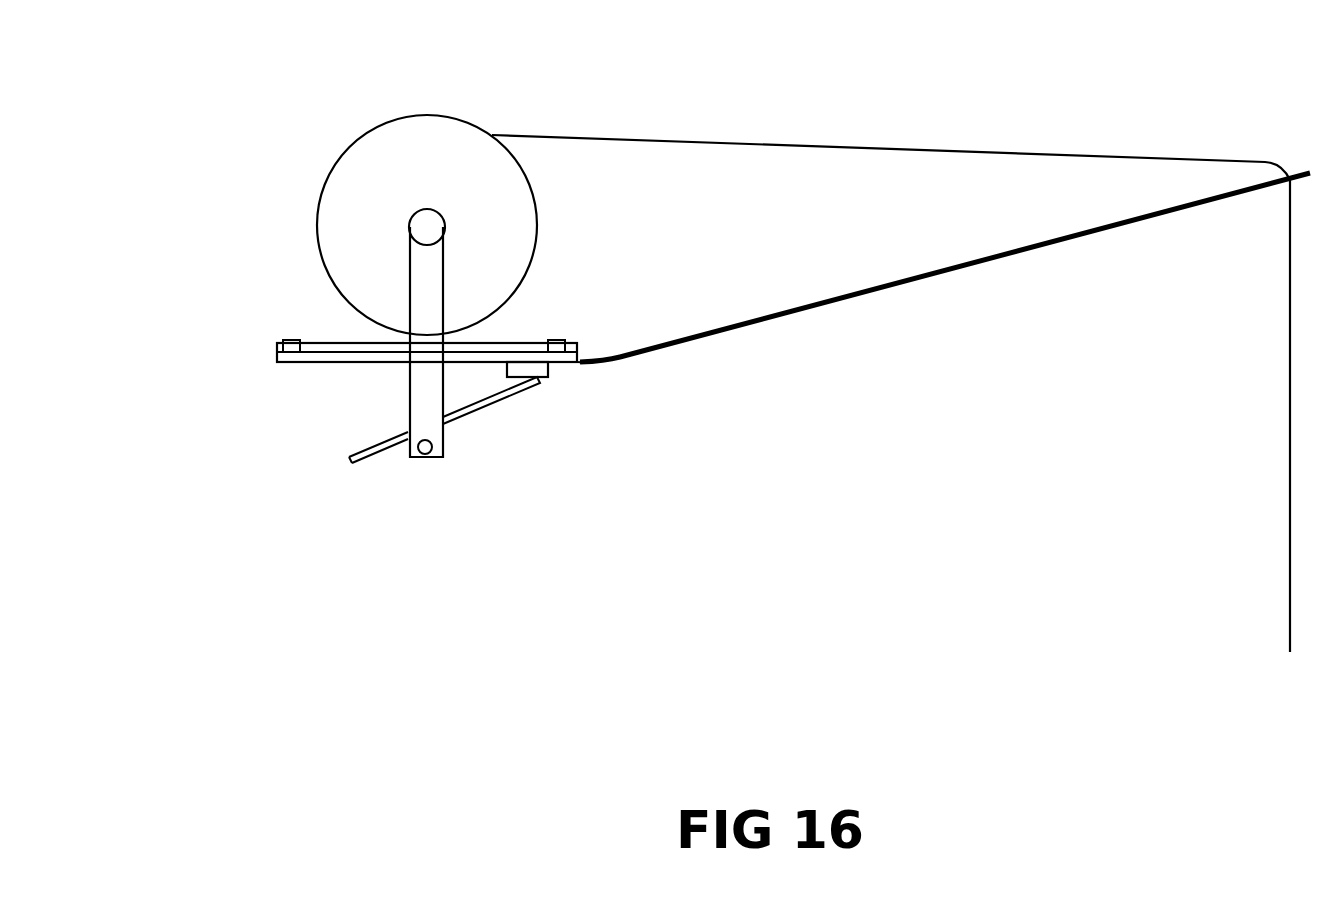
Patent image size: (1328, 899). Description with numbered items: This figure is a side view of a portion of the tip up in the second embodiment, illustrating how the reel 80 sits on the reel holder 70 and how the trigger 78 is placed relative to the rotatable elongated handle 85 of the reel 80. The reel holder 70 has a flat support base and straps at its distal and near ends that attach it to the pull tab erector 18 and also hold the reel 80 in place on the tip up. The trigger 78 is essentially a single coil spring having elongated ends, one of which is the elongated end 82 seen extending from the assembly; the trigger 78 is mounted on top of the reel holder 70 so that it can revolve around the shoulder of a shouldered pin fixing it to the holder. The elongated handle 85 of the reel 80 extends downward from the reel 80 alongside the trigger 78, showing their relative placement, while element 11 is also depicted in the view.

The reel 80 is at (350, 117).
The elongated handle 85 is at (407, 390).
The elongated end 82 is at (480, 410).
The reel holder 70 is at (582, 343).
The trigger 78 is at (547, 382).
The tarp 11 is at (835, 303).
The pull tab erector 18 is at (587, 367).